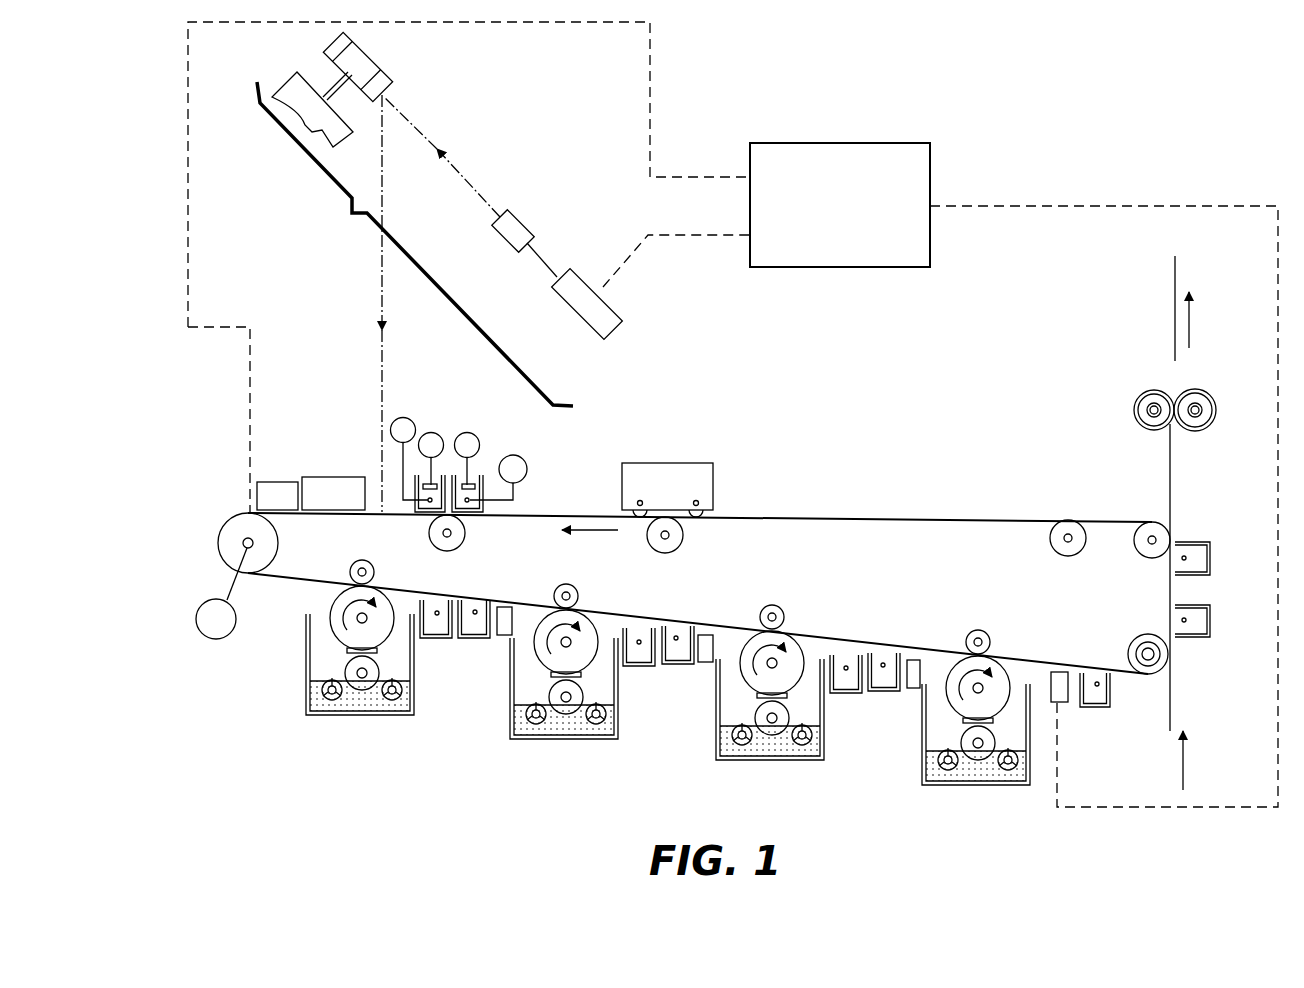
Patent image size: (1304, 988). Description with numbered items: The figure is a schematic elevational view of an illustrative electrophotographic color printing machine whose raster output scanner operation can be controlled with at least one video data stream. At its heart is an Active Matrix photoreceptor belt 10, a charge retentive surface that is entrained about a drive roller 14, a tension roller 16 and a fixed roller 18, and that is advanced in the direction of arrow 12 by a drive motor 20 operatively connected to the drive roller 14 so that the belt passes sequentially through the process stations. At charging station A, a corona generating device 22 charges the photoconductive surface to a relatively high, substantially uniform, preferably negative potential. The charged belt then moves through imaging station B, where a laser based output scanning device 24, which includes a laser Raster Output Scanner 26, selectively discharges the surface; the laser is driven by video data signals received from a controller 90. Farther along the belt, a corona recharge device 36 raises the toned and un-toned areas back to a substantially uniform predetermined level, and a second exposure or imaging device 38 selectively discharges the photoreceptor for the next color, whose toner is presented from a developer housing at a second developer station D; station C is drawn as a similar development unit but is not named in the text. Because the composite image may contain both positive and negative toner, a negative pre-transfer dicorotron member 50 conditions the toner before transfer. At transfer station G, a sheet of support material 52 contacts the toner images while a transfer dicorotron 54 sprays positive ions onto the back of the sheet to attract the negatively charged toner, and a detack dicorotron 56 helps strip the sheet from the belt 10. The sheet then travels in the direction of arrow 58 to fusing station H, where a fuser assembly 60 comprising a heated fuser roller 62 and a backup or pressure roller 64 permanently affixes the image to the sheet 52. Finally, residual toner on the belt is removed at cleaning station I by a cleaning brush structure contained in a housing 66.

The photoreceptor belt 10 is at (915, 520).
The arrow 12 is at (578, 523).
The drive roller 14 is at (228, 522).
The tension roller 16 is at (1152, 670).
The fixed roller 18 is at (1150, 530).
The drive motor 20 is at (223, 630).
The corona generating device 22 is at (450, 427).
The laser based output scanning device 24 is at (352, 215).
The laser Raster Output Scanner 26 is at (560, 231).
The corona recharge device 36 is at (432, 605).
The second exposure or imaging device 38 is at (505, 633).
The negative pre-transfer dicorotron member 50 is at (1105, 710).
The sheet of support material 52 is at (1178, 263).
The transfer dicorotron 54 is at (1210, 635).
The detack dicorotron 56 is at (1208, 545).
The arrow 58 is at (1193, 317).
The fuser assembly 60 is at (1186, 377).
The heated fuser roller 62 is at (1144, 398).
The backup or pressure roller 64 is at (1218, 404).
The housing 66 is at (665, 477).
The controller 90 is at (835, 143).
The charging station A is at (513, 444).
The imaging station B is at (363, 463).
The station C is at (313, 727).
The second developer station D is at (517, 752).
The transfer station G is at (1232, 573).
The fusing station H is at (1209, 383).
The cleaning station I is at (717, 451).